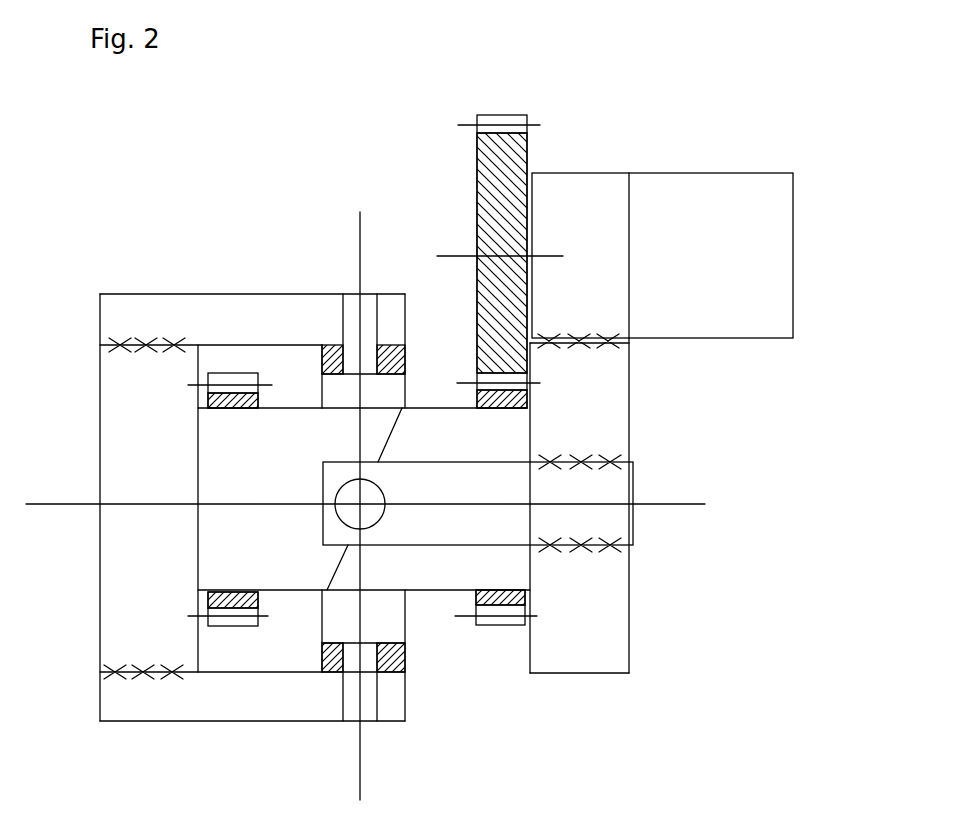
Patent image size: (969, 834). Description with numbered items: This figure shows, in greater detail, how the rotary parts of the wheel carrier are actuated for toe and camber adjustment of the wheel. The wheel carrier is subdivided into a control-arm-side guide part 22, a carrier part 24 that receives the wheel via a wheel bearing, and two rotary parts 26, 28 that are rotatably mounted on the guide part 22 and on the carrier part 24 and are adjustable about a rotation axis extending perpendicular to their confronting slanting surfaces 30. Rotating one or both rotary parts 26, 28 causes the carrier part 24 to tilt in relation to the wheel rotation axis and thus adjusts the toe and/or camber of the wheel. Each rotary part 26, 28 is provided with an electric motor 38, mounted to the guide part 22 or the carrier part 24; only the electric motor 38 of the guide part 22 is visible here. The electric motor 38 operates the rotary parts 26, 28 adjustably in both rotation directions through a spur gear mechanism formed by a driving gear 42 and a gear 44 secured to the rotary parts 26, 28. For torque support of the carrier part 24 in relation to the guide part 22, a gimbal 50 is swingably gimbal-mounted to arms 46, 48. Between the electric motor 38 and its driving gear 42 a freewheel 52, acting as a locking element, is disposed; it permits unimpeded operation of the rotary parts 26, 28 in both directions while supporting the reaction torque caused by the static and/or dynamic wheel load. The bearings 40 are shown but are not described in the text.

The guide part 22 is at (629, 645).
The carrier part 24 is at (100, 558).
The rotary part 26 is at (445, 579).
The rotary part 28 is at (273, 466).
The slanting surface 30 is at (392, 433).
The electric motor 38 is at (697, 268).
The bearing 40 is at (218, 362).
The driving gear 42 is at (500, 114).
The gear 44 is at (216, 631).
The arm 46 is at (510, 461).
The arm 48 is at (100, 322).
The gimbal 50 is at (405, 614).
The freewheel 52 is at (586, 162).